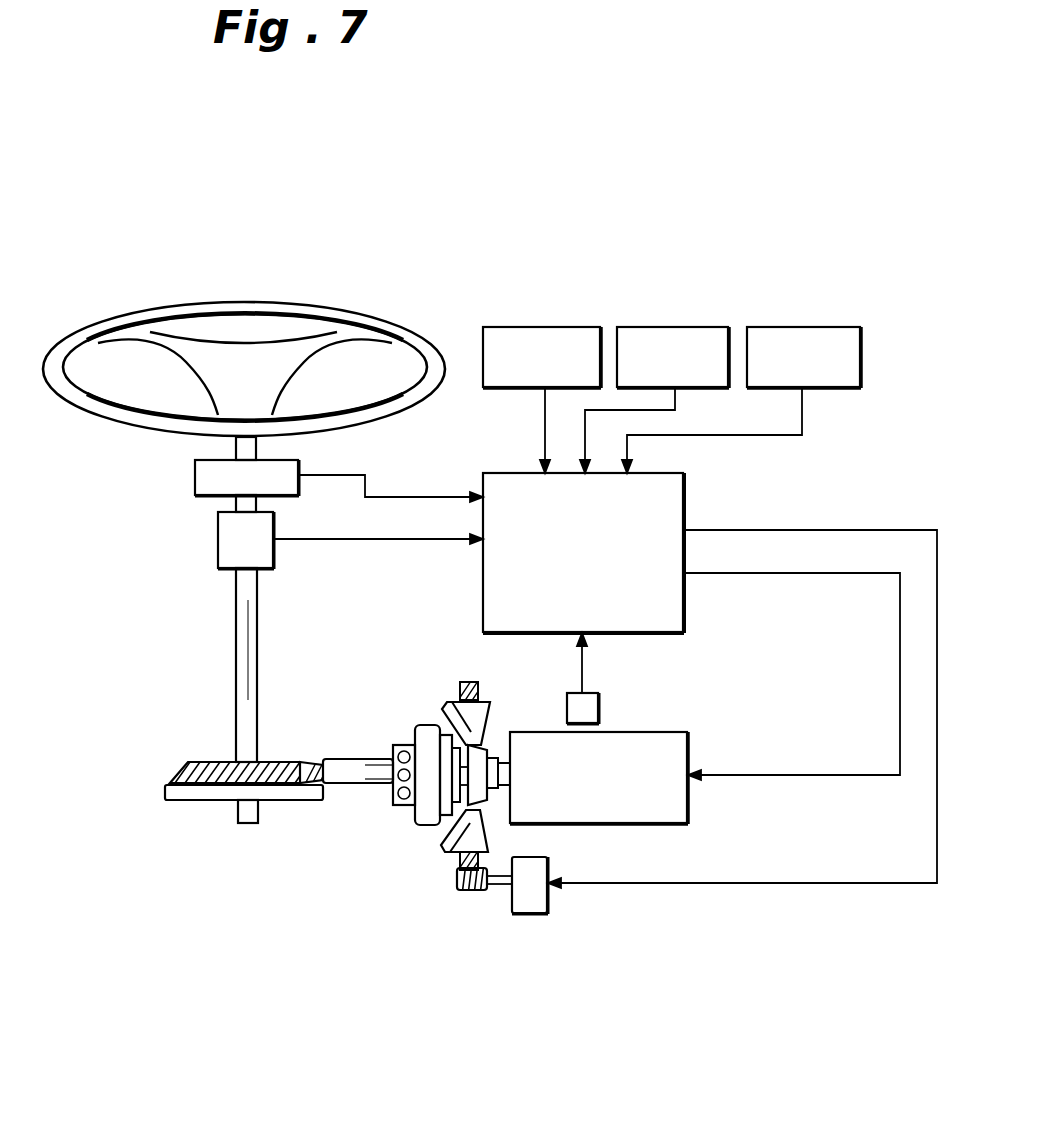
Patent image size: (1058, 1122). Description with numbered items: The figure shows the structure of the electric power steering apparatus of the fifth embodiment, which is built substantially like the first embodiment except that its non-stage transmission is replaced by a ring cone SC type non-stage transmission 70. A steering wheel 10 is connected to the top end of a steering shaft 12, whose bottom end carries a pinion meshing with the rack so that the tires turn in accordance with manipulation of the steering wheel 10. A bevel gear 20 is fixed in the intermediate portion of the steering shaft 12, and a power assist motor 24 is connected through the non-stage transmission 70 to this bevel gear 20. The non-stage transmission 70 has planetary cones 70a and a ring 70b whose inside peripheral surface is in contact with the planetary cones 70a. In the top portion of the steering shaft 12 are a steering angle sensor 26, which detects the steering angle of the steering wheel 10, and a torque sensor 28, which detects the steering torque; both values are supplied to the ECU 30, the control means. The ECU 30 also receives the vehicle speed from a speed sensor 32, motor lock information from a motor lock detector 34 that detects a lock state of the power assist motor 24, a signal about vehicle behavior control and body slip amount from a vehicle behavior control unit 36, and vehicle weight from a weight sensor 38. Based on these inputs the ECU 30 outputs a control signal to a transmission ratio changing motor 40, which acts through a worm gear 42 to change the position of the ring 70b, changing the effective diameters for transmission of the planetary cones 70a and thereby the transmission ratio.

The steering wheel 10 is at (287, 313).
The steering shaft 12 is at (235, 660).
The bevel gear 20 is at (185, 793).
The power assist motor 24 is at (688, 740).
The steering angle sensor 26 is at (195, 475).
The torque sensor 28 is at (218, 543).
The ECU 30 is at (685, 503).
The speed sensor 32 is at (542, 327).
The motor lock detector 34 is at (598, 707).
The vehicle behavior control unit 36 is at (678, 327).
The weight sensor 38 is at (810, 327).
The transmission ratio changing motor 40 is at (528, 902).
The worm gear 42 is at (470, 893).
The non-stage transmission 70 is at (402, 692).
The planetary cones 70a is at (448, 698).
The ring 70b is at (452, 862).